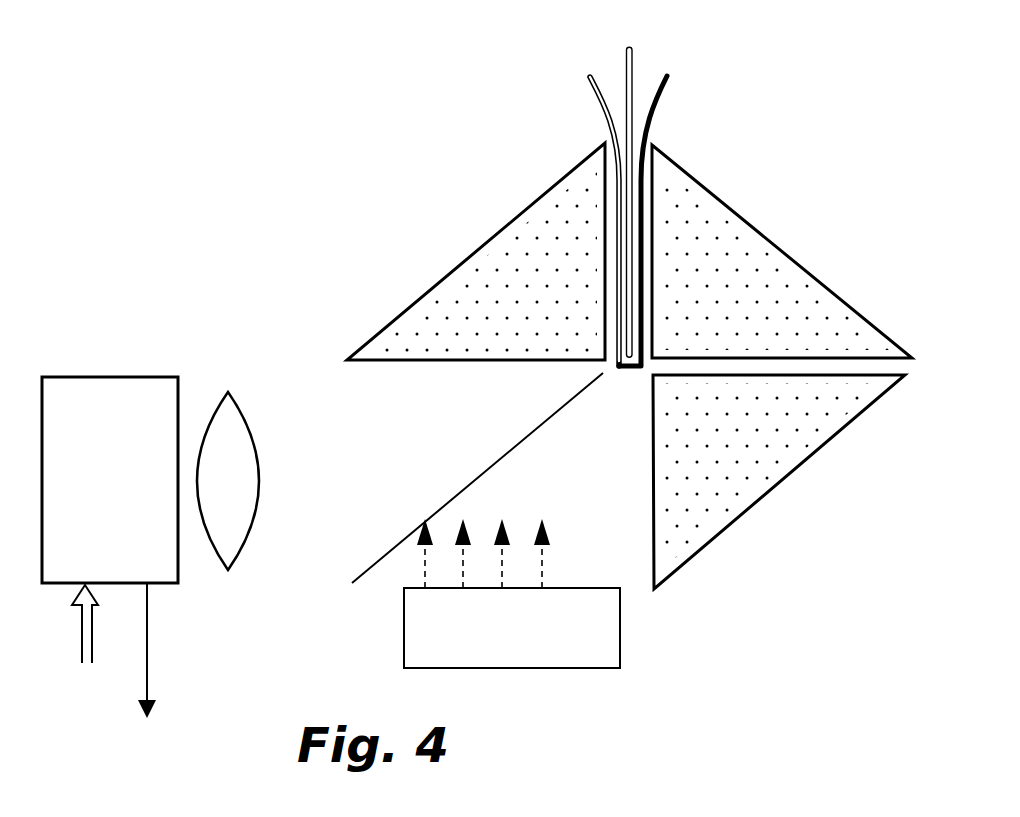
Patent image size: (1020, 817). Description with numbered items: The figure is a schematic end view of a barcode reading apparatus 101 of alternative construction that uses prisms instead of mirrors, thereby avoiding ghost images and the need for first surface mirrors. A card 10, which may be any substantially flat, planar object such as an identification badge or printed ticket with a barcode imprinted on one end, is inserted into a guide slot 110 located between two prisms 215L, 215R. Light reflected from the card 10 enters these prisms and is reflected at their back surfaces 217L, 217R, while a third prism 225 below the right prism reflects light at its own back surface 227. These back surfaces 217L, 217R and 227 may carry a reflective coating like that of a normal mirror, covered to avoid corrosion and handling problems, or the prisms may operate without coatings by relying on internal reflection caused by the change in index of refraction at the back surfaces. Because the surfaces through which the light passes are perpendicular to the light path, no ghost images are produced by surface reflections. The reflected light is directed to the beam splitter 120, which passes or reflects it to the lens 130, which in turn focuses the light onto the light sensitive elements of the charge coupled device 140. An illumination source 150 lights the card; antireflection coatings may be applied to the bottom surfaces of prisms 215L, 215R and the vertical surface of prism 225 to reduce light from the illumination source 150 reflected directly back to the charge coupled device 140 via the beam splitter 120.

The card 10 is at (633, 67).
The guide slot 110 is at (617, 135).
The barcode reading apparatus 101 is at (800, 142).
The back surface 217L is at (485, 244).
The prism 215L is at (483, 258).
The back surface 217R is at (756, 227).
The prism 215R is at (775, 258).
The back surface 227 is at (758, 504).
The prism 225 is at (772, 476).
The beam splitter 120 is at (377, 562).
The illumination source 150 is at (404, 640).
The charge coupled device 140 is at (132, 334).
The lens 130 is at (262, 332).